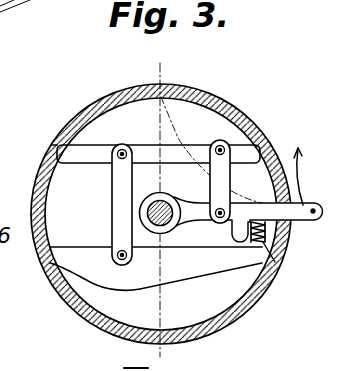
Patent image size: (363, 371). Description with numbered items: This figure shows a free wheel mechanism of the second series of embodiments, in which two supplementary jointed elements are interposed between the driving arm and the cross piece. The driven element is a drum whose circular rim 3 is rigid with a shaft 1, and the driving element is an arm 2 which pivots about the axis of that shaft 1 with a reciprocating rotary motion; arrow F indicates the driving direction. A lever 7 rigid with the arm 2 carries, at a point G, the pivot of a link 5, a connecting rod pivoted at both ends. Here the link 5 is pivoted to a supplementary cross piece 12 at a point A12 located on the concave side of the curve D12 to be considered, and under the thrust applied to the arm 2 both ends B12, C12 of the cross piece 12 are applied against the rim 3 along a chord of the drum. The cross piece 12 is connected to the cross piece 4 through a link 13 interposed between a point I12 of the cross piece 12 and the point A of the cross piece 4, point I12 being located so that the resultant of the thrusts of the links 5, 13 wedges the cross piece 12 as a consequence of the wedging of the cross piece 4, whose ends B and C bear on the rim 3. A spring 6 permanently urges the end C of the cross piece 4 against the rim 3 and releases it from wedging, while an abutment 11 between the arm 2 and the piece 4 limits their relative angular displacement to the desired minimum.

The shaft 1 is at (165, 201).
The arm 2 is at (291, 218).
The rim 3 is at (204, 110).
The cross piece 4 is at (169, 267).
The link 5 is at (221, 182).
The spring 6 is at (268, 273).
The lever 7 is at (203, 216).
The abutment 11 is at (236, 230).
The cross piece 12 is at (100, 157).
The link 13 is at (118, 208).
The point A is at (123, 262).
The end of cross piece B is at (44, 257).
The end of cross piece C is at (272, 258).
The point G is at (220, 220).
The arrow F is at (310, 176).
The point I12 is at (121, 149).
The point A12 is at (218, 147).
The end of cross piece B12 is at (287, 129).
The end of cross piece C12 is at (57, 152).
The curve D12 is at (209, 150).